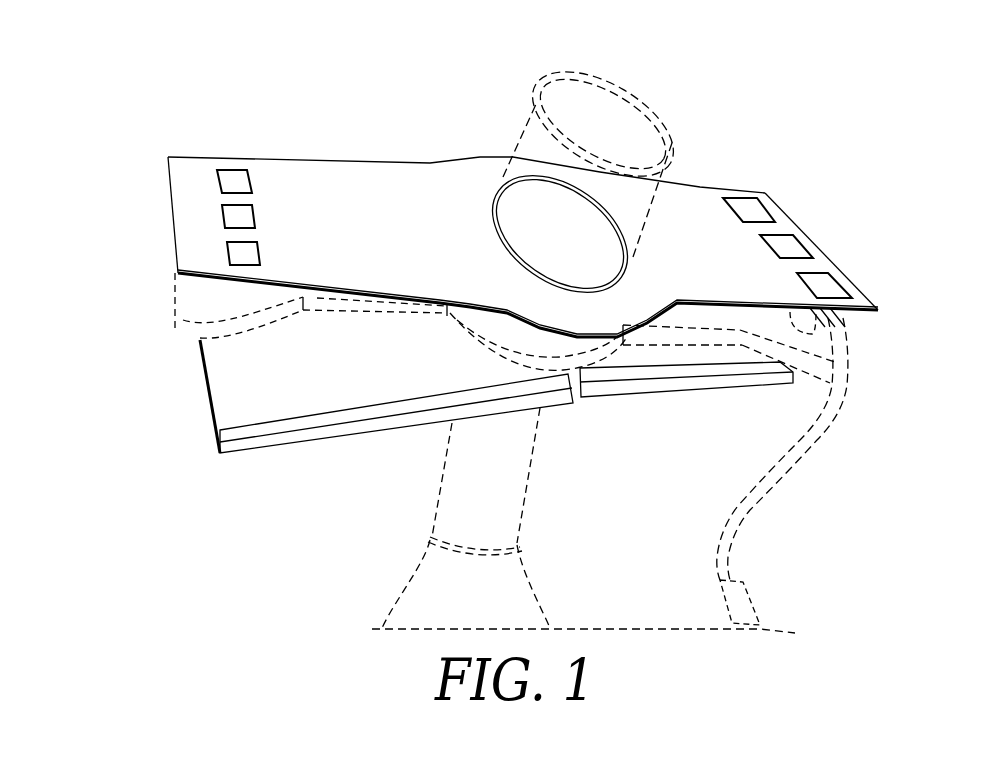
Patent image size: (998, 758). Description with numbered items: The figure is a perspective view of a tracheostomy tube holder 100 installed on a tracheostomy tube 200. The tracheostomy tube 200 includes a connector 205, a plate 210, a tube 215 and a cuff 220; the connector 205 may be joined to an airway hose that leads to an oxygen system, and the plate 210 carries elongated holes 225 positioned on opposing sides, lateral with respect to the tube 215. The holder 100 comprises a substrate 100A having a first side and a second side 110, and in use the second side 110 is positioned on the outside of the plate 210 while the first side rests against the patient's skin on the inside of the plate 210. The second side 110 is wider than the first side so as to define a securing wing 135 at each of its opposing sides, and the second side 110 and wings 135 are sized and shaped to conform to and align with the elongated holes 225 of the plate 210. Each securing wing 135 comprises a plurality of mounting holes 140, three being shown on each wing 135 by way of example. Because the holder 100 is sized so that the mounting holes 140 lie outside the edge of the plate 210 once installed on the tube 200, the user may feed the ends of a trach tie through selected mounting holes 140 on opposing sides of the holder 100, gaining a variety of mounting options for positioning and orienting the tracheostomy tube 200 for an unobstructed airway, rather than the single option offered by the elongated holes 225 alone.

The tracheostomy tube holder 100 is at (866, 80).
The substrate 100A is at (480, 163).
The second side 110 is at (500, 230).
The securing wing 135 is at (156, 163).
The mounting holes 140 is at (220, 178).
The tracheostomy tube 200 is at (509, 89).
The connector 205 is at (628, 97).
The plate 210 is at (193, 320).
The tube 215 is at (484, 481).
The cuff 220 is at (583, 586).
The elongated holes 225 is at (817, 327).